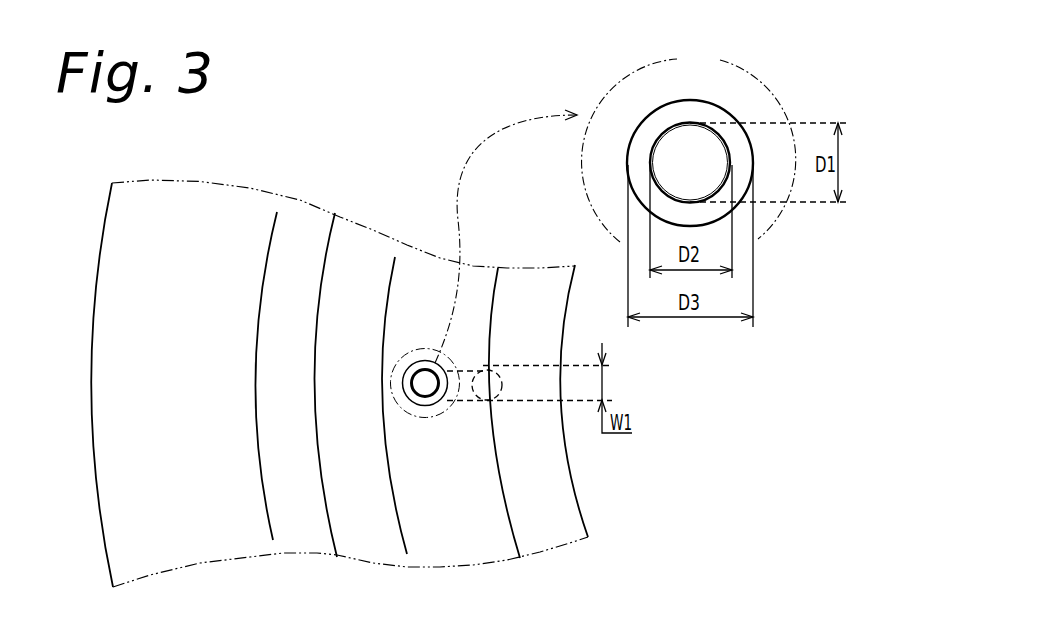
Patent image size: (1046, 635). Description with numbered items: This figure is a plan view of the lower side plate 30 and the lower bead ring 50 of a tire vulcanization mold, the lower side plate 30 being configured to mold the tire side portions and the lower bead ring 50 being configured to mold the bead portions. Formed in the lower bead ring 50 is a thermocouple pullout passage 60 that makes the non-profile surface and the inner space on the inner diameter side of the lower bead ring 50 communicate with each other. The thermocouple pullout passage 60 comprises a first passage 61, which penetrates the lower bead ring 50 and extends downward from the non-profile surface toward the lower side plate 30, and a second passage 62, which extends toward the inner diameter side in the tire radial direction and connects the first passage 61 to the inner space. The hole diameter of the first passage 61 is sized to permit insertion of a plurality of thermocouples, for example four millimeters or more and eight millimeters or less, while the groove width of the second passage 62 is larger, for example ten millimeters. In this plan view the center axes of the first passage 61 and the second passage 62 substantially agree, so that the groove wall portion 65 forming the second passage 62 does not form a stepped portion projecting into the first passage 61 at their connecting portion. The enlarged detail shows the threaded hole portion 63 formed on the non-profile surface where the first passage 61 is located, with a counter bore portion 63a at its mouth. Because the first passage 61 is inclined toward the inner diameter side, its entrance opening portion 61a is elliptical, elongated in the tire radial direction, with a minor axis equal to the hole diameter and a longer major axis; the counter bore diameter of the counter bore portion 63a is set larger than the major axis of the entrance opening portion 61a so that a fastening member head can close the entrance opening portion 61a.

The lower side plate 30 is at (219, 218).
The lower bead ring 50 is at (577, 515).
The thermocouple pullout passage 60 is at (548, 252).
The first passage 61 is at (461, 368).
The second passage 62 is at (508, 365).
The threaded hole portion 63 is at (683, 148).
The counter bore portion 63a is at (638, 128).
The entrance opening portion 61a is at (732, 155).
The groove wall portion 65 is at (506, 396).